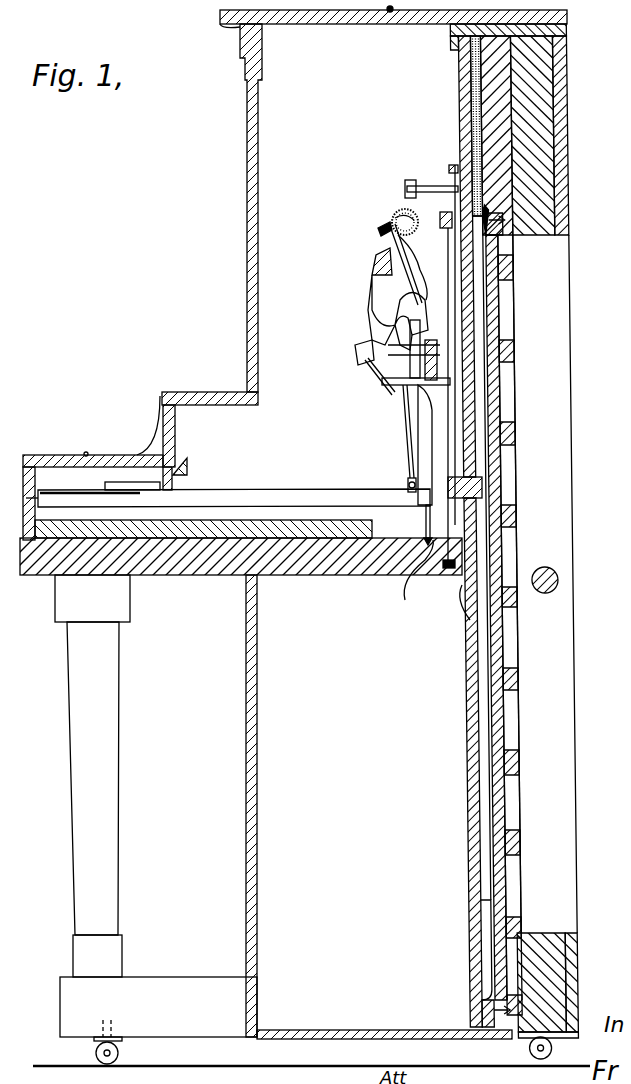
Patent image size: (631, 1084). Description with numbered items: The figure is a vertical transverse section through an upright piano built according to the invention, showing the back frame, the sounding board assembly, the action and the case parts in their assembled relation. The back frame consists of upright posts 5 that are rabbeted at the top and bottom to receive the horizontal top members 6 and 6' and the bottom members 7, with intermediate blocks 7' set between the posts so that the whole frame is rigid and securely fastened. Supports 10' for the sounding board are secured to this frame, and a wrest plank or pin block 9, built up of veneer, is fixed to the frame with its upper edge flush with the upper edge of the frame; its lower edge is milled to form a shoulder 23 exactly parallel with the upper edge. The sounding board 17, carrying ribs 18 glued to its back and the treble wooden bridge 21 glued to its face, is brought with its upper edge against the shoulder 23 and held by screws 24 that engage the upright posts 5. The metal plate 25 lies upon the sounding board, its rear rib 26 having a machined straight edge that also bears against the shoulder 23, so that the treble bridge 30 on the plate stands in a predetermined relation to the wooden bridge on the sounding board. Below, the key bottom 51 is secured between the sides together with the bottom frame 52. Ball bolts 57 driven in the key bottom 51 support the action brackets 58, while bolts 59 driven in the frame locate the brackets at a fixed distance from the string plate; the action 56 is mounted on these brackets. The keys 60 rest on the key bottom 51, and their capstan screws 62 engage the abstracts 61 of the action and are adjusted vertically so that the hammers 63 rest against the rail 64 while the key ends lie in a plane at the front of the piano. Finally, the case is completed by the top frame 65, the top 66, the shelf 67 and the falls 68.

The upright posts 5 is at (562, 486).
The horizontal top member 6 is at (315, 542).
The horizontal top member 6' is at (315, 542).
The bottom members 7 is at (315, 542).
The intermediate blocks 7' is at (315, 542).
The wrest plank or pin block 9 is at (458, 86).
The supports for the sounding board 10' is at (315, 542).
The sounding board 17 is at (497, 395).
The ribs 18 is at (508, 345).
The treble wooden bridge 21 is at (490, 490).
The shoulder of the wrest plank 23 is at (486, 202).
The screws 24 is at (500, 218).
The metal plate 25 is at (462, 658).
The rib 26 is at (495, 242).
The treble bridge on the metal plate 30 is at (315, 542).
The key bottom 51 is at (330, 576).
The bottom frame 52 is at (258, 823).
The action 56 is at (360, 298).
The ball bolts 57 is at (437, 580).
The action brackets 58 is at (420, 400).
The bolts 59 is at (430, 186).
The keys 60 is at (240, 490).
The abstracts 61 is at (407, 440).
The capstan screws 62 is at (410, 483).
The hammers 63 is at (400, 210).
The rail 64 is at (372, 258).
The top frame 65 is at (259, 192).
The top 66 is at (338, 25).
The shelf 67 is at (183, 392).
The falls 68 is at (50, 455).